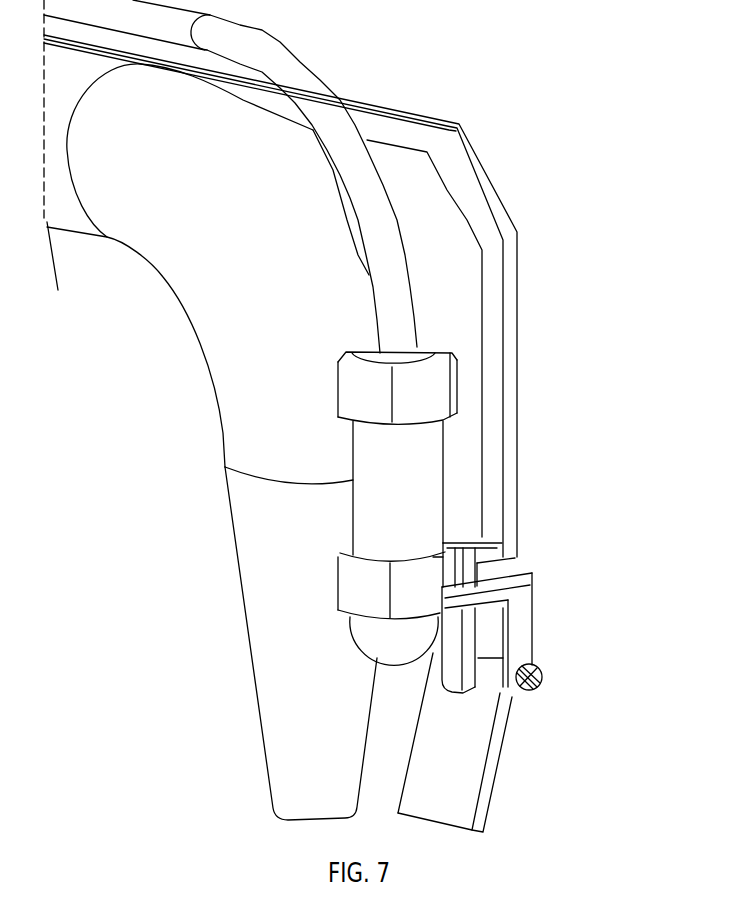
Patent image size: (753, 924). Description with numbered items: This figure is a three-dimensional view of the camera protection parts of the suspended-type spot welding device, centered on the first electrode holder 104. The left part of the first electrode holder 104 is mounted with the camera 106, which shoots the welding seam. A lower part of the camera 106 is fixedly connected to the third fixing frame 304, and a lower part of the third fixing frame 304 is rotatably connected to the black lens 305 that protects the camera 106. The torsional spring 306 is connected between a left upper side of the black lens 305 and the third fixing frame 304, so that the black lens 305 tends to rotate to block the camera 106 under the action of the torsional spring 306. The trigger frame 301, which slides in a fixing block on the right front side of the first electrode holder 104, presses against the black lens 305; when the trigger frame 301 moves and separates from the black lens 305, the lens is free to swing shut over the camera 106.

The first electrode holder 104 is at (268, 252).
The camera 106 is at (420, 400).
The trigger frame 301 is at (493, 443).
The third fixing frame 304 is at (522, 627).
The torsional spring 306 is at (543, 680).
The black lens 305 is at (480, 730).